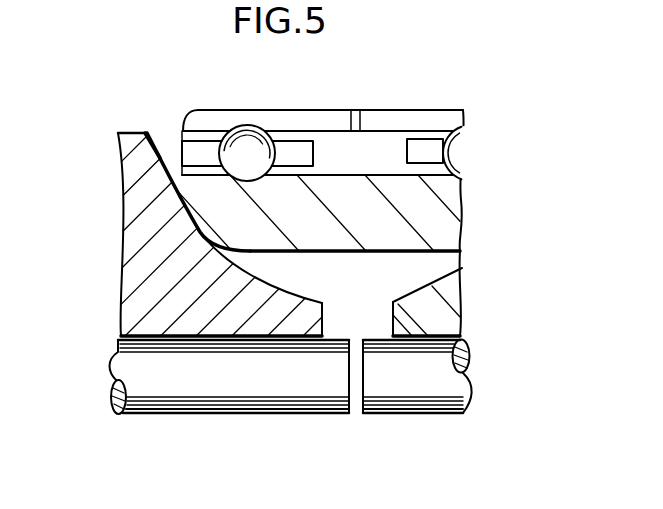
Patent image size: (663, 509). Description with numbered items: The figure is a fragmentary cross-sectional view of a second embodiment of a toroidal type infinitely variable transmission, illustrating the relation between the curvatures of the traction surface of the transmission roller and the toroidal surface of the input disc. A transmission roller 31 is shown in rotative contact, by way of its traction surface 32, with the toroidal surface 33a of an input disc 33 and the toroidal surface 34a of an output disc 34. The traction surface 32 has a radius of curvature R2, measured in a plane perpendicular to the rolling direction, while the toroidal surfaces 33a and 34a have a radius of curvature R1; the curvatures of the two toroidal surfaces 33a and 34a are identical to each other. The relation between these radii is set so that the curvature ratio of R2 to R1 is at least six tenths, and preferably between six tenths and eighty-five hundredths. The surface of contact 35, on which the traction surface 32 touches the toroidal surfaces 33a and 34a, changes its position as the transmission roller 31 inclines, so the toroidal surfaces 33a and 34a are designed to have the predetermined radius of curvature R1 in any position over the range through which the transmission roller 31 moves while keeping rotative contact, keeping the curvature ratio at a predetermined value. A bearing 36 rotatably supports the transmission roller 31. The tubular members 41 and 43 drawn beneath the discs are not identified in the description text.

The transmission roller 31 is at (440, 222).
The traction surface 32 is at (200, 217).
The input disc 33 is at (128, 141).
The toroidal surface 33a is at (165, 165).
The output disc 34 is at (448, 317).
The toroidal surface 34a is at (415, 281).
The surface of contact 35 is at (213, 221).
The bearing 36 is at (250, 133).
The guide tube (left) 41 is at (243, 390).
The guide tube (right) 43 is at (417, 397).
The radius of curvature of the toroidal surfaces R1 is at (130, 206).
The radius of curvature of the traction surface R2 is at (207, 257).